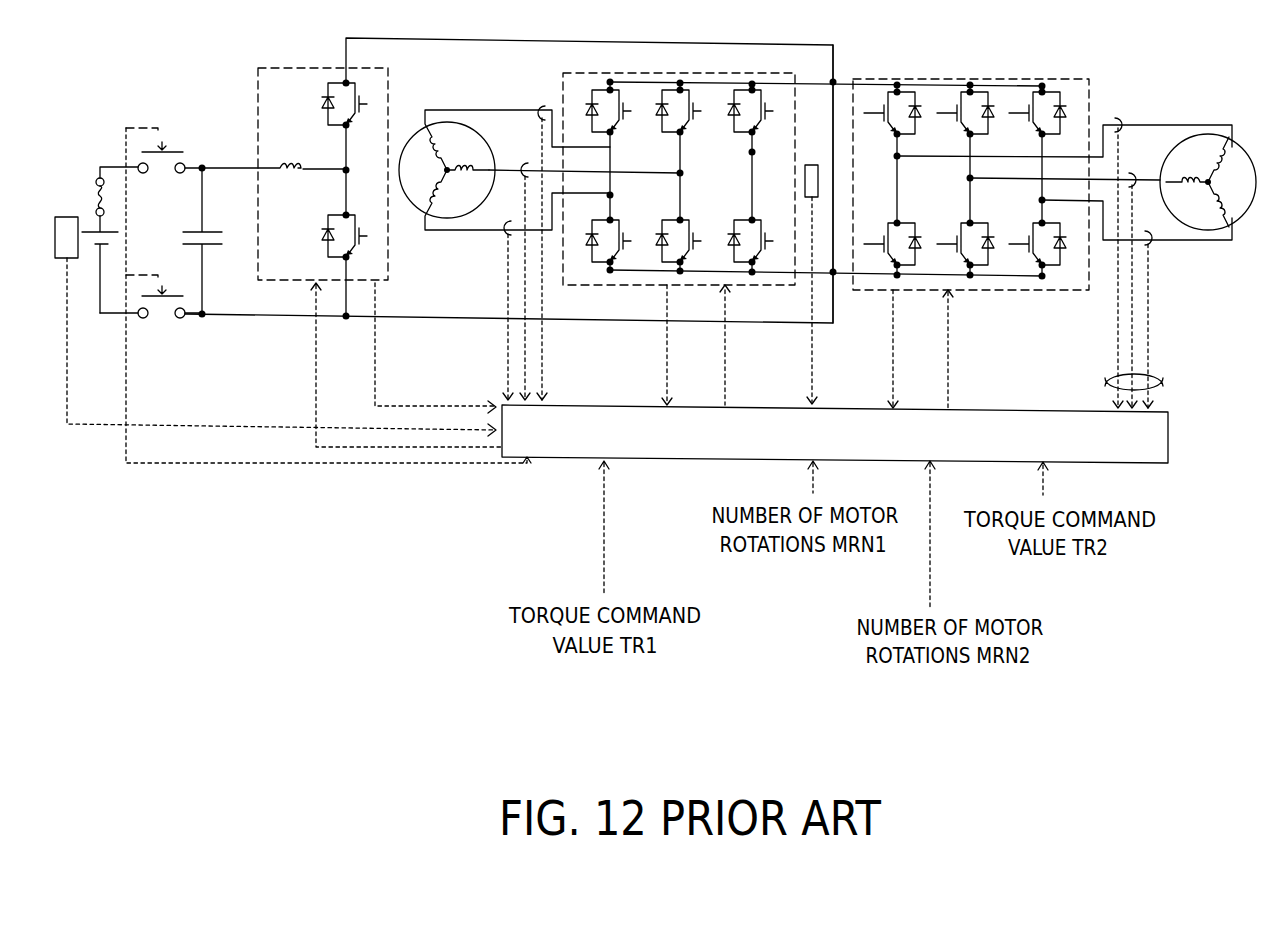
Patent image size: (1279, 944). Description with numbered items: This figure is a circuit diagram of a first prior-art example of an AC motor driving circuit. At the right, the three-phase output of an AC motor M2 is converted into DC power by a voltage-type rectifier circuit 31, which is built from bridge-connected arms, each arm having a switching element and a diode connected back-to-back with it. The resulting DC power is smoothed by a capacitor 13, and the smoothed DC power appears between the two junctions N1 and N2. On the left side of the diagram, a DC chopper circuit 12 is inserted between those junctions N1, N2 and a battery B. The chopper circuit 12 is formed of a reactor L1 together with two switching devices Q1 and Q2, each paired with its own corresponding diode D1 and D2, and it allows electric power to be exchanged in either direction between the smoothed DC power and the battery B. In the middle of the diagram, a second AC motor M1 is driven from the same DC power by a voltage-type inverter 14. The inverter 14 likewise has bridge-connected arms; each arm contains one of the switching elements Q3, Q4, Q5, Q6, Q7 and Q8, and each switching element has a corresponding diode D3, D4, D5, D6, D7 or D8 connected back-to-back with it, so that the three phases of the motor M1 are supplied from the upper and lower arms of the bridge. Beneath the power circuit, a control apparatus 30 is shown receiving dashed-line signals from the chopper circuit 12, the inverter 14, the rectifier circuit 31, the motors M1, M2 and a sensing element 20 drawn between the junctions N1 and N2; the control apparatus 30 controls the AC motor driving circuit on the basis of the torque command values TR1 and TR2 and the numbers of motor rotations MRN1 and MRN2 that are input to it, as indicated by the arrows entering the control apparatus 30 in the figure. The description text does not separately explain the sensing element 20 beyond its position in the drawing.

The DC chopper circuit 12 is at (292, 66).
The capacitor 13 is at (846, 180).
The voltage-type inverter 14 is at (641, 72).
The voltage sensor 20 is at (812, 165).
The control apparatus 30 is at (1168, 437).
The voltage-type rectifier circuit 31 is at (992, 78).
The battery B is at (92, 254).
The reactor L1 is at (280, 155).
The AC motor M1 is at (428, 133).
The AC motor M2 is at (1241, 146).
The junction N1 is at (831, 80).
The junction N2 is at (838, 276).
The switching device Q1 is at (361, 102).
The switching device Q2 is at (361, 233).
The switching element Q3 is at (627, 110).
The switching element Q4 is at (627, 240).
The switching element Q5 is at (697, 110).
The switching element Q6 is at (697, 240).
The switching element Q7 is at (769, 110).
The switching element Q8 is at (769, 240).
The diode D1 is at (324, 100).
The diode D2 is at (324, 231).
The diode D3 is at (590, 115).
The diode D4 is at (590, 245).
The diode D5 is at (660, 115).
The diode D6 is at (660, 245).
The diode D7 is at (732, 115).
The diode D8 is at (732, 245).